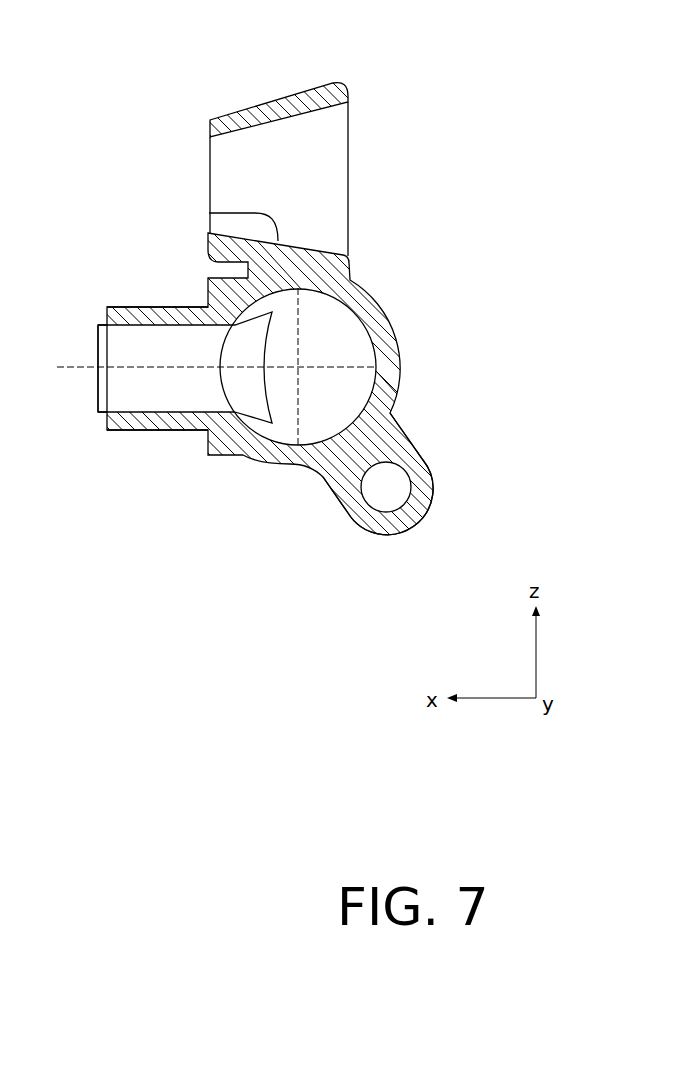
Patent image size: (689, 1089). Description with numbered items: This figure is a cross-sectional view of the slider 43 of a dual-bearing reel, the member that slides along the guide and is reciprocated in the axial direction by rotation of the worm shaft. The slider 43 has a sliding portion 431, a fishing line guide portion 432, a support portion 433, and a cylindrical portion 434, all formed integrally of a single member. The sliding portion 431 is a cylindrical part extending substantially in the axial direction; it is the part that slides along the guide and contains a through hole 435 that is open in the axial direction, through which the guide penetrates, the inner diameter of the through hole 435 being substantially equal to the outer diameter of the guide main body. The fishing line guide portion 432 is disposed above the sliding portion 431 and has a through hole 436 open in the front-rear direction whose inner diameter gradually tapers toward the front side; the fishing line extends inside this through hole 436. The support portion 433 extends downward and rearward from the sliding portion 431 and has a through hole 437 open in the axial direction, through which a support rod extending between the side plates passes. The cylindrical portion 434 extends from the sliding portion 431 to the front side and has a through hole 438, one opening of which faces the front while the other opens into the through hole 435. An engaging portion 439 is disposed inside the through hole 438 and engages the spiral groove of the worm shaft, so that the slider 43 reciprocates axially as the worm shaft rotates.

The slider 43 is at (203, 102).
The sliding portion 431 is at (400, 377).
The fishing line guide portion 432 is at (209, 122).
The support portion 433 is at (418, 530).
The cylindrical portion 434 is at (148, 431).
The through hole 435 is at (345, 432).
The through hole 436 is at (208, 212).
The through hole 437 is at (380, 508).
The through hole 438 is at (157, 322).
The engaging portion 439 is at (97, 387).